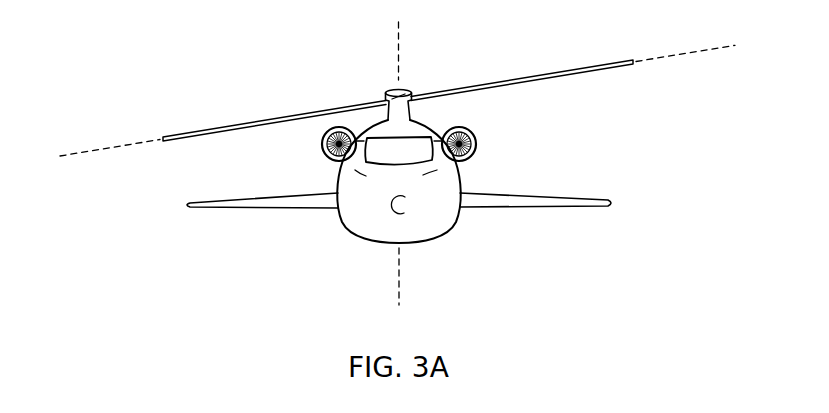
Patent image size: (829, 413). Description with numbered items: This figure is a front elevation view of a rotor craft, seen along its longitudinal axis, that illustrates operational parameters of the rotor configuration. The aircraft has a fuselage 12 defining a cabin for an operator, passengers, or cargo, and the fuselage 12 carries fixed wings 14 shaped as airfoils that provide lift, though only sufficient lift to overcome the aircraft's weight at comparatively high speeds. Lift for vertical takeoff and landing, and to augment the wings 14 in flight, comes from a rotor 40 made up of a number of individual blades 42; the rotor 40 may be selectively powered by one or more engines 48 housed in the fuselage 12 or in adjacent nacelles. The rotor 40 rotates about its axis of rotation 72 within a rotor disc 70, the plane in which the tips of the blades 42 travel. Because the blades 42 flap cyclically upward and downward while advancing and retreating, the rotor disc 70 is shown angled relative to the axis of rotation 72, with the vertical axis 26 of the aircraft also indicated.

The fuselage 12 is at (366, 223).
The fixed wings 14 is at (272, 208).
The vertical axis 26 is at (403, 287).
The rotor 40 is at (355, 87).
The blades 42 is at (228, 127).
The engines 48 is at (322, 145).
The rotor disc 70 is at (678, 54).
The axis of rotation 72 is at (402, 40).